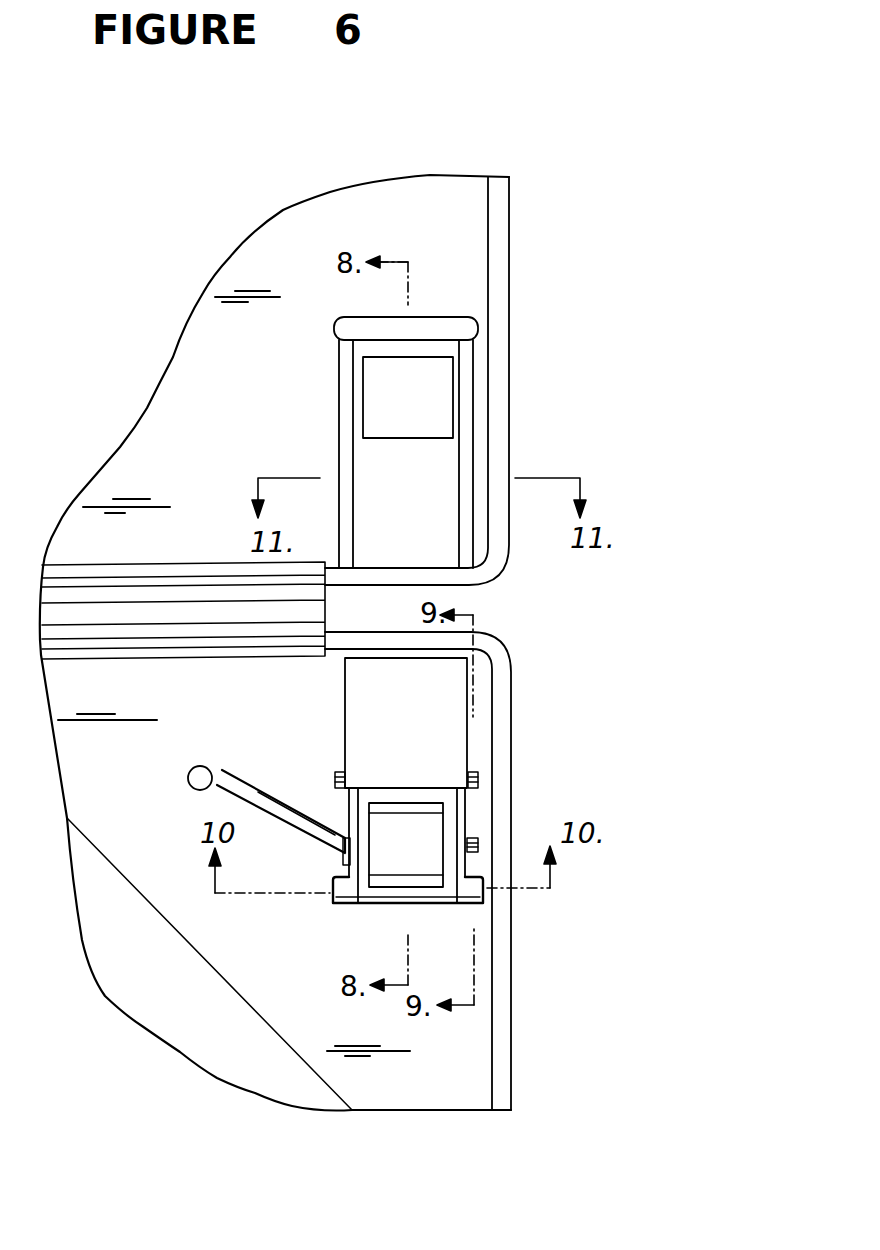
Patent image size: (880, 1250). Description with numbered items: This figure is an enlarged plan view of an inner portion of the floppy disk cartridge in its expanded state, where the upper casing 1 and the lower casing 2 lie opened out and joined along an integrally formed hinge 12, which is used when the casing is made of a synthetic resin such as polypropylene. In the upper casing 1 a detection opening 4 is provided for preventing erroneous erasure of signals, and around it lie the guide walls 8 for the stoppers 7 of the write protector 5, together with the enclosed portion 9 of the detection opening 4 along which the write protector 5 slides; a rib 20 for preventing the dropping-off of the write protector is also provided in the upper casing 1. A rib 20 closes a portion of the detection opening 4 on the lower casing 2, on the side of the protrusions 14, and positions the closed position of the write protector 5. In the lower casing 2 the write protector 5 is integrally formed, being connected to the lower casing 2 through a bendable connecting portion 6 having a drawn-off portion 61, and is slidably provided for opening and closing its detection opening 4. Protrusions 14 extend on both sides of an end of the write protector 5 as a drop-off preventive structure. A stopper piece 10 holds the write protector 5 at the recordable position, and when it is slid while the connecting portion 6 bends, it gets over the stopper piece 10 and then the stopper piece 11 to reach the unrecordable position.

The upper casing 1 is at (467, 245).
The lower casing 2 is at (472, 1053).
The detection opening 4 is at (450, 390).
The write protector 5 is at (462, 815).
The connecting portion 6 is at (265, 790).
The stopper 7 is at (347, 862).
The guide wall 8 is at (465, 438).
The enclosed portion 9 is at (425, 518).
The stopper piece 10 is at (478, 832).
The stopper piece 11 is at (338, 772).
The hinge 12 is at (297, 609).
The protrusion 14 is at (333, 905).
The rib 20 is at (455, 327).
The drawn-off portion 61 is at (318, 816).